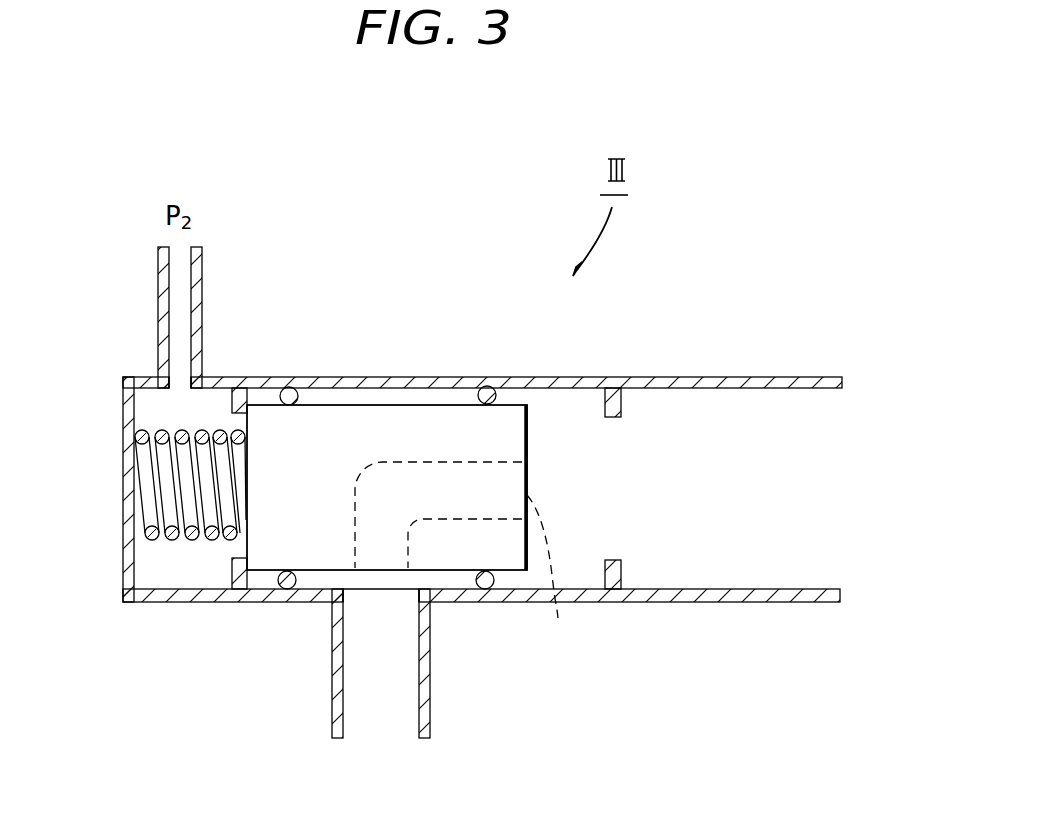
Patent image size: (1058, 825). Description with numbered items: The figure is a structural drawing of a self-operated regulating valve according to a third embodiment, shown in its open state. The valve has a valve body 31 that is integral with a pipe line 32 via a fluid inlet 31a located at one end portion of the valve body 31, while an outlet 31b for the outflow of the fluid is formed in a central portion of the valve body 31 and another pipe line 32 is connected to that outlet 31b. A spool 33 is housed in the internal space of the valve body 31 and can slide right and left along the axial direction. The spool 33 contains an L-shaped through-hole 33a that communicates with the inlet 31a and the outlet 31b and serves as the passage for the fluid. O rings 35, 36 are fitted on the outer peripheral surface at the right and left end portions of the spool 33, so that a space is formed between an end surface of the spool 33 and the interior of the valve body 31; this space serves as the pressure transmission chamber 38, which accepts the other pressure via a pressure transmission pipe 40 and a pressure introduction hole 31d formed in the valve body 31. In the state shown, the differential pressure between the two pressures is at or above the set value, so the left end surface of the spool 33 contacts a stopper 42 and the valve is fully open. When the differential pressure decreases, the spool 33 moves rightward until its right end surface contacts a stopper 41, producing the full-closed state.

The valve body 31 is at (407, 377).
The fluid inlet 31a is at (625, 458).
The outlet 31b is at (390, 600).
The pressure introduction hole 31d is at (177, 385).
The pipe line 32 is at (430, 700).
The spool 33 is at (338, 420).
The L-shaped through-hole 33a is at (570, 578).
The O ring 35 is at (488, 388).
The O ring 36 is at (289, 388).
The pressure transmission chamber 38 is at (140, 410).
The pressure transmission pipe 40 is at (202, 265).
The stopper 41 is at (629, 380).
The stopper 42 is at (238, 388).